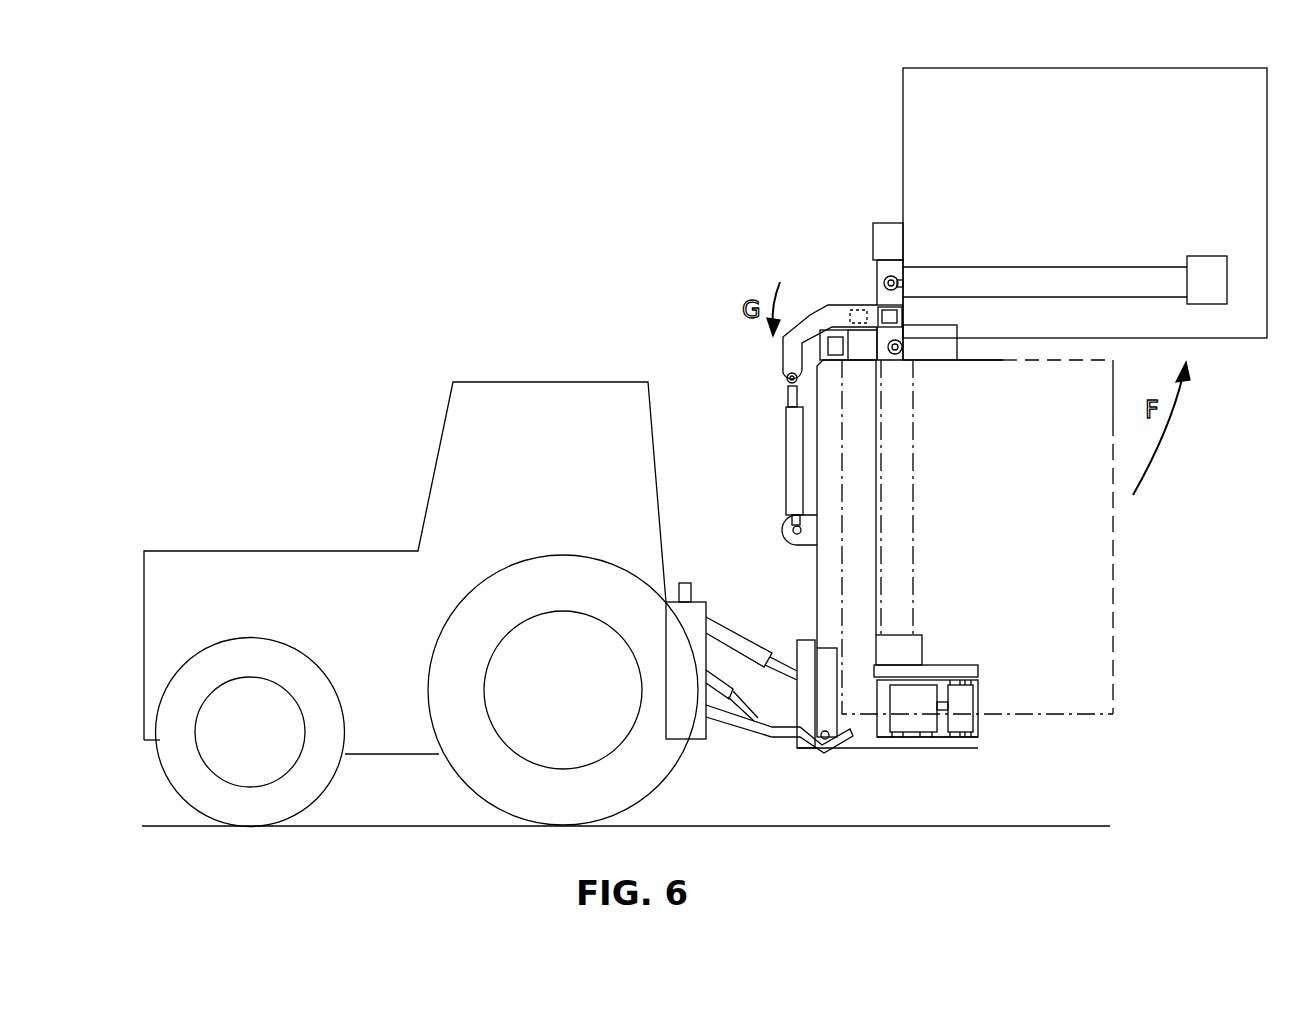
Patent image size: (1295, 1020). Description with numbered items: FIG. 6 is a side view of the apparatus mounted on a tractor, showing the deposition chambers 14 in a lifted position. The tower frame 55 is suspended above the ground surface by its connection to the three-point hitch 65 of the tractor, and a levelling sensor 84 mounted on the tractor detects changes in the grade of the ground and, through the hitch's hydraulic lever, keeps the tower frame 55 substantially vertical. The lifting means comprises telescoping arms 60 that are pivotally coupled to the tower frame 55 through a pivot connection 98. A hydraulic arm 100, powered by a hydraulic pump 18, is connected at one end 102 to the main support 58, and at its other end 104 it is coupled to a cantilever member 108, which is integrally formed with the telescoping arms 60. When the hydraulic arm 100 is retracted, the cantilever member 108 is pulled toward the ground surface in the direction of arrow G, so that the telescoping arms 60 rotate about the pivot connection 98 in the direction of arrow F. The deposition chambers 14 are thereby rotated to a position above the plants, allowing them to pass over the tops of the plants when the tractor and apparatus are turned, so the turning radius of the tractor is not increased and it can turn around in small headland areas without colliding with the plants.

The deposition chambers 14 is at (1127, 67).
The hydraulic pump 18 is at (913, 720).
The tower frame 55 is at (875, 502).
The main support 58 is at (815, 575).
The telescoping arms 60 is at (900, 315).
The 3-point hitch 65 is at (772, 735).
The levelling sensor 84 is at (686, 583).
The pivot connection 98 is at (863, 317).
The hydraulic arm 100 is at (792, 465).
The one end 102 is at (788, 530).
The other end 104 is at (786, 377).
The cantilever member 108 is at (815, 310).